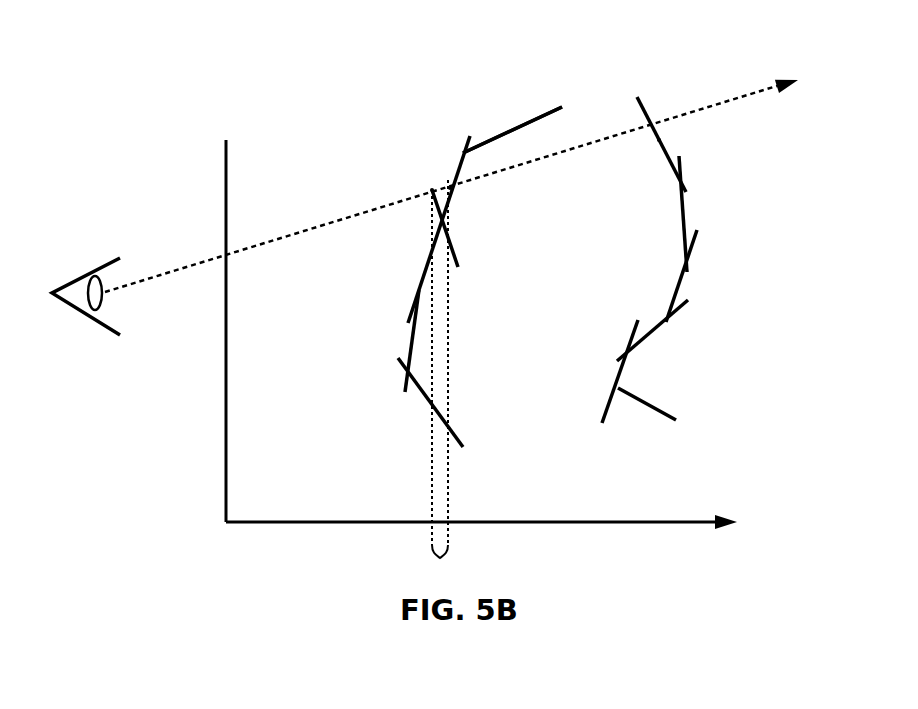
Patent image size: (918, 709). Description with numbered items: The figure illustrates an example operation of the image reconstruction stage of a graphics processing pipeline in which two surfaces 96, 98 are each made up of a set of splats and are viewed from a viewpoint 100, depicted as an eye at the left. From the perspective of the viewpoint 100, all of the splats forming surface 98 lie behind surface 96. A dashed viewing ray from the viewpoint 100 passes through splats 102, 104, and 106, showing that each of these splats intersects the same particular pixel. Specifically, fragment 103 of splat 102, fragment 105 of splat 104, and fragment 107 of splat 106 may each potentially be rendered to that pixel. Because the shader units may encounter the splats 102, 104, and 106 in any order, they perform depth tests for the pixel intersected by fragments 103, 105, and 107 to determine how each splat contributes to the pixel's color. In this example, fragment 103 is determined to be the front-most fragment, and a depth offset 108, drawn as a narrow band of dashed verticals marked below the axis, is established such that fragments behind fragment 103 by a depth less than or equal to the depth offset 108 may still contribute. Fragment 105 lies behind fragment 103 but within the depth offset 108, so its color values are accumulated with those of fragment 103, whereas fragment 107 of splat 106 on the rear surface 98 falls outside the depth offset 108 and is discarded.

The surface 96 is at (454, 260).
The surface 98 is at (646, 227).
The viewpoint 100 is at (177, 270).
The splat 102 is at (442, 230).
The fragment 103 is at (429, 188).
The splat 104 is at (460, 158).
The fragment 105 is at (452, 190).
The splat 106 is at (660, 140).
The fragment 107 is at (648, 123).
The depth offset 108 is at (436, 382).